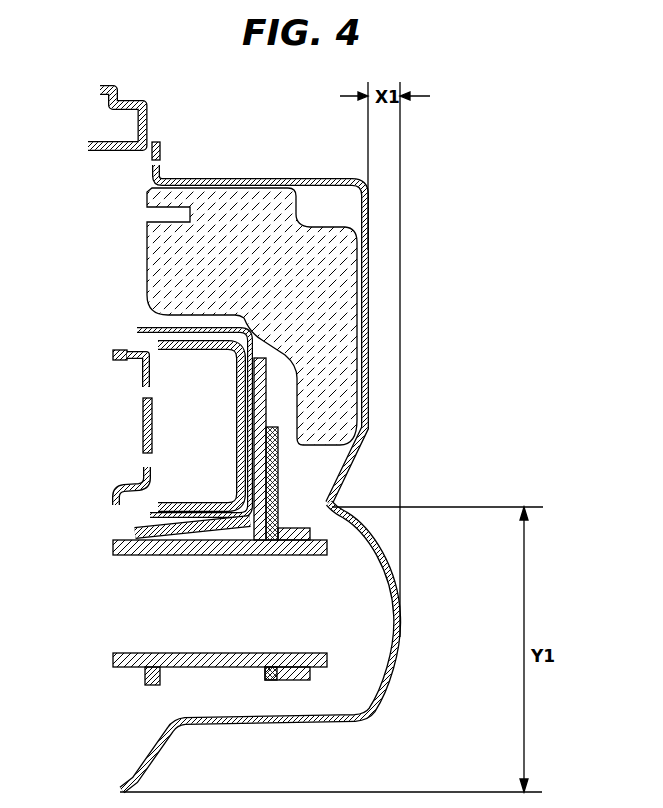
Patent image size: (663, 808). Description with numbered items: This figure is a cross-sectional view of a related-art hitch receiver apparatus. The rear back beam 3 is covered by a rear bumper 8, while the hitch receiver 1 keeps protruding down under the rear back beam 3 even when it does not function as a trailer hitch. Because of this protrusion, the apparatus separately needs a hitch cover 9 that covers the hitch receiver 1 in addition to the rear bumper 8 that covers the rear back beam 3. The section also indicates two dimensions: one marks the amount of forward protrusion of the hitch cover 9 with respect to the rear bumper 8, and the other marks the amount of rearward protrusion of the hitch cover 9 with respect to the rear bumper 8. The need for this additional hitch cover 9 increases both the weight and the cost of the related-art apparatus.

The hitch receiver 1 is at (170, 655).
The rear back beam 3 is at (142, 420).
The rear bumper 8 is at (295, 180).
The hitch cover 9 is at (398, 665).